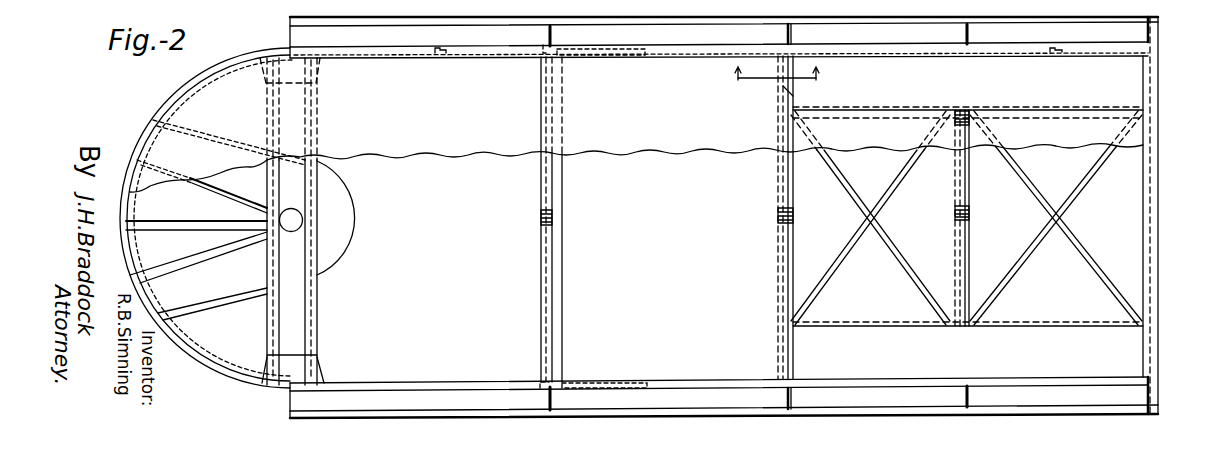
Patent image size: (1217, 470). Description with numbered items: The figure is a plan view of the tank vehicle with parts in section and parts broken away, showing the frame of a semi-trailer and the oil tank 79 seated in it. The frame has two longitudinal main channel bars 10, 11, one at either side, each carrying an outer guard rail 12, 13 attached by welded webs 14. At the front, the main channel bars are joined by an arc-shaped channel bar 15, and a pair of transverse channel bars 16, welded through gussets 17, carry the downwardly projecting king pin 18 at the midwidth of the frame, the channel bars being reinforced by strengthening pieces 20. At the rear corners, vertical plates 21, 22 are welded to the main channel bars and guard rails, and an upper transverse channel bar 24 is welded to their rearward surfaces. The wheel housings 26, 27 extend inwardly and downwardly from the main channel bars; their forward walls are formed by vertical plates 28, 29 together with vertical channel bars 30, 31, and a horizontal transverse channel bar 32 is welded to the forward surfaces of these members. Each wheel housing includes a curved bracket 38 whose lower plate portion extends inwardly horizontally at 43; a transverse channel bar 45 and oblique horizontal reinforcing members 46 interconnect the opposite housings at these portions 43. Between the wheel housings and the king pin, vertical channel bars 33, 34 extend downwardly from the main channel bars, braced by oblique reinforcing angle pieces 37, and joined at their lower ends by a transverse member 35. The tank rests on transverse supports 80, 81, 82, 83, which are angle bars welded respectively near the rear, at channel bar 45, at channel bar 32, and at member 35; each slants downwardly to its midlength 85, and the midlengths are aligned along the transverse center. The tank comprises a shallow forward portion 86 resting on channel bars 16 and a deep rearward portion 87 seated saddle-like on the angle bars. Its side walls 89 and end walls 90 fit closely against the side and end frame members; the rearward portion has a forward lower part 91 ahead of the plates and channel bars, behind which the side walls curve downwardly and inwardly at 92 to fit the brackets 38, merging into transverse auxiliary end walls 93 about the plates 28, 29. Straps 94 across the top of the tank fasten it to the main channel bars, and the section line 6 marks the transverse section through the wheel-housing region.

The section line 6 is at (781, 87).
The main channel bar 10 is at (434, 383).
The main channel bar 11 is at (516, 55).
The guard rail 12 is at (483, 414).
The guard rail 13 is at (518, 24).
The web 14 is at (289, 34).
The arc-shaped channel bar 15 is at (163, 107).
The transverse channel bar 16 is at (267, 326).
The gusset 17 is at (318, 68).
The king pin 18 is at (303, 222).
The strengthening piece 20 is at (347, 204).
The vertical plate 21 is at (1145, 346).
The vertical plate 22 is at (1146, 30).
The upper transverse channel bar 24 is at (1160, 194).
The wheel housing 26 is at (968, 341).
The wheel housing 27 is at (968, 86).
The vertical plate 28 is at (795, 351).
The vertical plate 29 is at (795, 92).
The vertical channel bar 30 is at (795, 398).
The vertical channel bar 31 is at (792, 34).
The transverse channel bar 32 is at (784, 35).
The vertical channel bar 33 is at (545, 386).
The vertical channel bar 34 is at (540, 46).
The transverse member 35 is at (564, 240).
The oblique reinforcing angle piece 37 is at (622, 58).
The curved bracket 38 is at (1060, 107).
The inwardly extending portion 43 is at (1104, 118).
The transverse channel bar 45 is at (966, 228).
The horizontal reinforcing member 46 is at (845, 256).
The oil tank 79 is at (452, 155).
The transverse support 80 is at (1142, 251).
The transverse support 81 is at (963, 268).
The transverse support 82 is at (780, 281).
The transverse support 83 is at (541, 286).
The midlength 85 is at (541, 218).
The forward portion 86 is at (378, 142).
The rearward portion 87 is at (801, 154).
The side wall 89 is at (406, 59).
The end wall 90 is at (178, 97).
The forward lower part 91 is at (618, 153).
The downwardly and inwardly curved portion 92 is at (1008, 115).
The auxiliary end wall 93 is at (782, 90).
The strap 94 is at (440, 48).